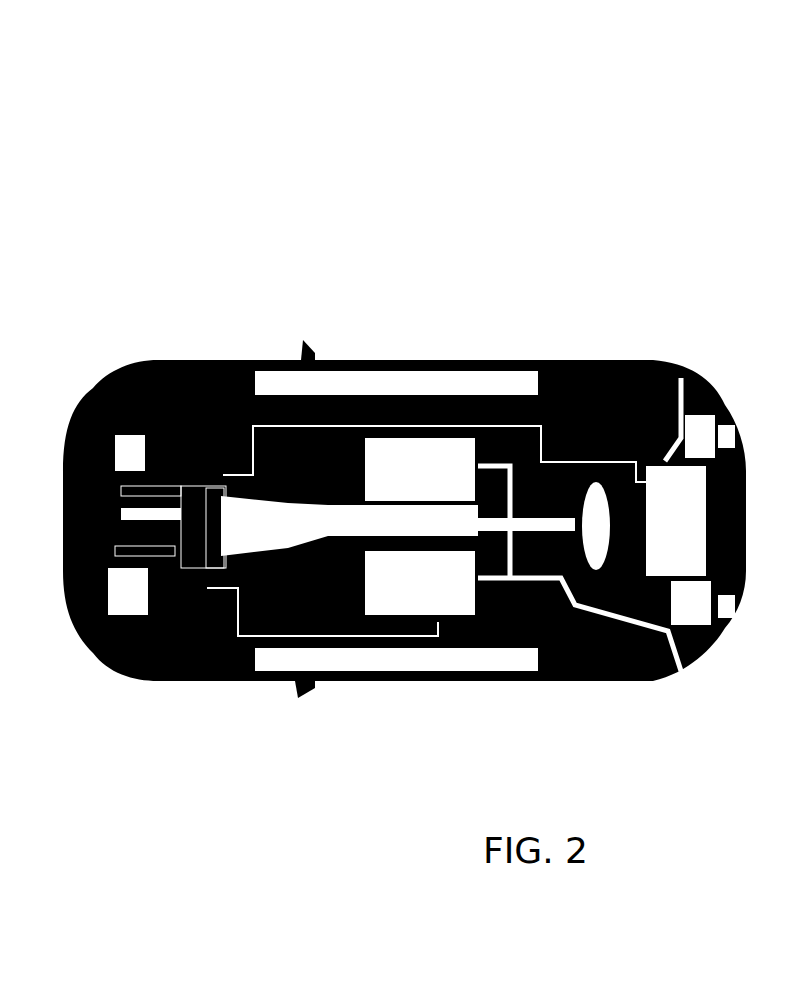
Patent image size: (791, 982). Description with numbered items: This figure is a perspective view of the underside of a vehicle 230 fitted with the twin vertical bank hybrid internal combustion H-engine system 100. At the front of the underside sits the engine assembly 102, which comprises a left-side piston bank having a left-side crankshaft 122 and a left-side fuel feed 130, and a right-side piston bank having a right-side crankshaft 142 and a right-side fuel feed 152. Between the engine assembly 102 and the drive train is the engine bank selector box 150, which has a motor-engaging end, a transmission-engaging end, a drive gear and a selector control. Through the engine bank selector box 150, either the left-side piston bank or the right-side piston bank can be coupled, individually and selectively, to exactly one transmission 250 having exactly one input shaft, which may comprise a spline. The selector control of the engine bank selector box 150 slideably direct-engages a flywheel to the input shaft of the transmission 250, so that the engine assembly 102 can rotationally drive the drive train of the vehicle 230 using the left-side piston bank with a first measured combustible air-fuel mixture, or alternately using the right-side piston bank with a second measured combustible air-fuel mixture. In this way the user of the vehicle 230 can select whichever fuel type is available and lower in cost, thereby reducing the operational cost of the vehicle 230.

The twin vertical bank hybrid internal combustion H-engine system 100 is at (562, 87).
The engine assembly 102 is at (173, 553).
The left-side crankshaft 122 is at (107, 547).
The left-side fuel feed 130 is at (387, 633).
The right-side crankshaft 142 is at (113, 478).
The engine bank selector box 150 is at (205, 478).
The right-side fuel feed 152 is at (592, 447).
The vehicle 230 is at (463, 352).
The transmission 250 is at (290, 538).